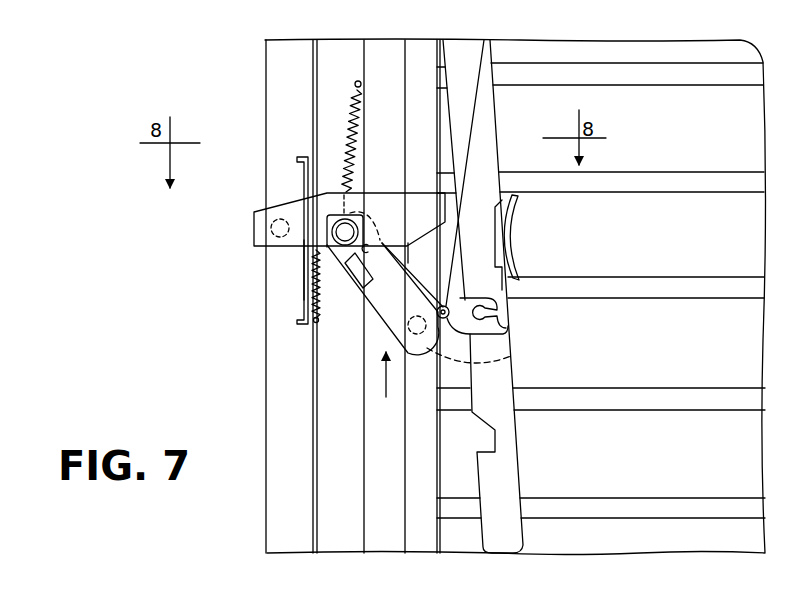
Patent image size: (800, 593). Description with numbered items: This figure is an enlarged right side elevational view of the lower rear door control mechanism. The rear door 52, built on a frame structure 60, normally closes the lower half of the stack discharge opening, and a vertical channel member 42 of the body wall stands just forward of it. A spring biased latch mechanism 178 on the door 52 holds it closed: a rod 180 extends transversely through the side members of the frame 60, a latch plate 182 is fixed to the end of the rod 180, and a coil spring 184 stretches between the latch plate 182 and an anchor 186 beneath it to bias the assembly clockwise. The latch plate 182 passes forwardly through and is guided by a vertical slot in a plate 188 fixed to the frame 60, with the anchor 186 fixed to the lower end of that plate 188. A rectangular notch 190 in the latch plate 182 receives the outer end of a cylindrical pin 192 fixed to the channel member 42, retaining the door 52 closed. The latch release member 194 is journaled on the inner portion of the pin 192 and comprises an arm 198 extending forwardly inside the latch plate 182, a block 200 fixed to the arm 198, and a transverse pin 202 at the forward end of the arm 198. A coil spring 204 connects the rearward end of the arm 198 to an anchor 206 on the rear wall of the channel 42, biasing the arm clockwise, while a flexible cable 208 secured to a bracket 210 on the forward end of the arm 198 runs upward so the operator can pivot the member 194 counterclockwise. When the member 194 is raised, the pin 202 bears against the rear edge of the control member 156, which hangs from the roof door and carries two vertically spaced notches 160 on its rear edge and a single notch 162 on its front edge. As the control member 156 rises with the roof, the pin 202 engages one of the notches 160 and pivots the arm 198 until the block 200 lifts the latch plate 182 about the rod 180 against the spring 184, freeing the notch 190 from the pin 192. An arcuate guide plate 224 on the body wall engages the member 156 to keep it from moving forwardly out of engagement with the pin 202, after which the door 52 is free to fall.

The vertical channel member 42 is at (373, 482).
The rear door 52 is at (256, 349).
The frame structure 60 is at (266, 388).
The control member 156 is at (505, 468).
The notches 160 is at (489, 314).
The notch 162 is at (498, 250).
The latch mechanism 178 is at (291, 188).
The rod 180 is at (272, 226).
The latch plate 182 is at (378, 205).
The coil spring 184 is at (312, 278).
The anchor 186 is at (312, 332).
The plate 188 is at (304, 267).
The rectangular notch 190 is at (372, 246).
The cylindrical pin 192 is at (334, 210).
The latch release member 194 is at (384, 386).
The arm 198 is at (383, 305).
The block 200 is at (355, 268).
The transverse pin 202 is at (512, 355).
The coil spring 204 is at (350, 113).
The anchor 206 is at (359, 81).
The flexible cable 208 is at (473, 152).
The bracket 210 is at (502, 334).
The arcuate guide plate 224 is at (510, 225).